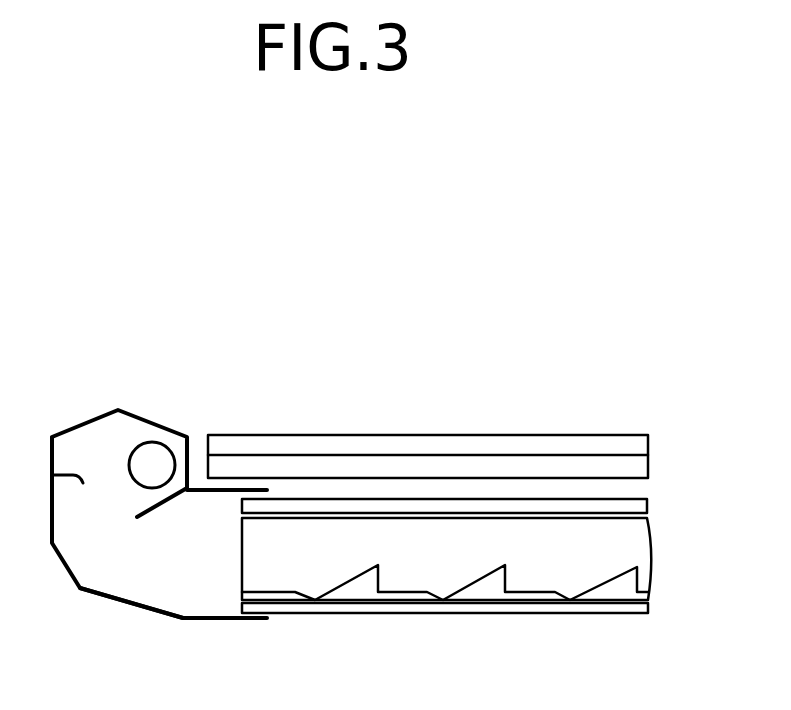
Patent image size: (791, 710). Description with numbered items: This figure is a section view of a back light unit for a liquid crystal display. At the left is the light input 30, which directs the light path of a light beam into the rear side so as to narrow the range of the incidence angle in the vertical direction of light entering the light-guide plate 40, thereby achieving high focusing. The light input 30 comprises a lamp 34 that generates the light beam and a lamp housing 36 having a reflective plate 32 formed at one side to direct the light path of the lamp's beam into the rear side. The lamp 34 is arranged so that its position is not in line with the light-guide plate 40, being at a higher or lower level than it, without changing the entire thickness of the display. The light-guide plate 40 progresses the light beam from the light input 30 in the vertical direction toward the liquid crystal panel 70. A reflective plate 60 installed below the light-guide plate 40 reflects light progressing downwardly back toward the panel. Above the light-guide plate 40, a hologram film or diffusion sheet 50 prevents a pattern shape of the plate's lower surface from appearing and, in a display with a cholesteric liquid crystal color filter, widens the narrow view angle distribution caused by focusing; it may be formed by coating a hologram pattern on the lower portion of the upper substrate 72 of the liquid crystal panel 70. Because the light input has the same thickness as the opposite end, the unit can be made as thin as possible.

The light input 30 is at (72, 405).
The reflective plate 32 is at (140, 512).
The lamp 34 is at (165, 442).
The lamp housing 36 is at (137, 607).
The light-guide plate 40 is at (573, 552).
The hologram film or diffusion sheet 50 is at (637, 503).
The reflective plate 60 is at (637, 607).
The liquid crystal panel 70 is at (469, 427).
The upper substrate 72 is at (618, 442).